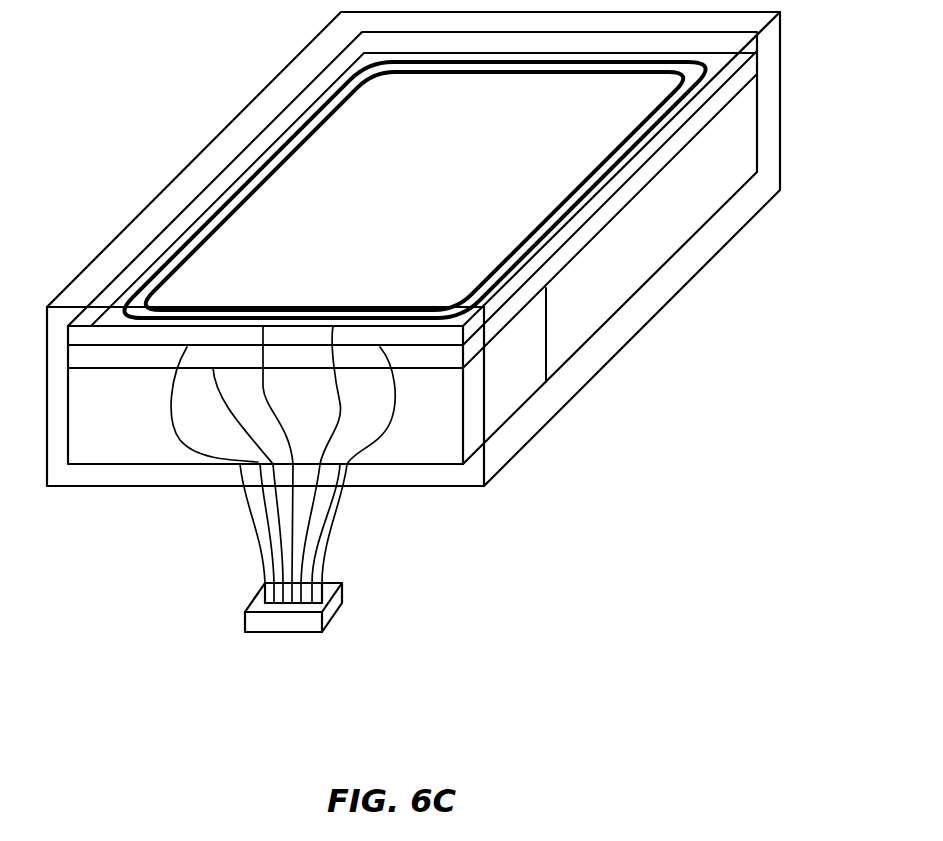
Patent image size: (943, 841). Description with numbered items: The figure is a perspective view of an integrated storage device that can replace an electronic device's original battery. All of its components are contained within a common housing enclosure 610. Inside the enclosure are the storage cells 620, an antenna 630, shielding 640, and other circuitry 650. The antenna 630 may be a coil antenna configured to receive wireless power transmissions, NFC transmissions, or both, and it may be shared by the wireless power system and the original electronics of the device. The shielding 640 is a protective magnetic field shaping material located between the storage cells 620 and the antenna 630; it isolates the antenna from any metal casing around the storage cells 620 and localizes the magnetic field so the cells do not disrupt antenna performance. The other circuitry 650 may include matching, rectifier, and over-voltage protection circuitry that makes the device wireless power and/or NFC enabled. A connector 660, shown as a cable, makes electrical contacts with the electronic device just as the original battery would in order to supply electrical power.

The common housing enclosure 610 is at (513, 446).
The storage cells 620 is at (608, 293).
The antenna 630 is at (687, 92).
The shielding 640 is at (653, 172).
The other circuitry 650 is at (502, 385).
The connector 660 is at (333, 608).